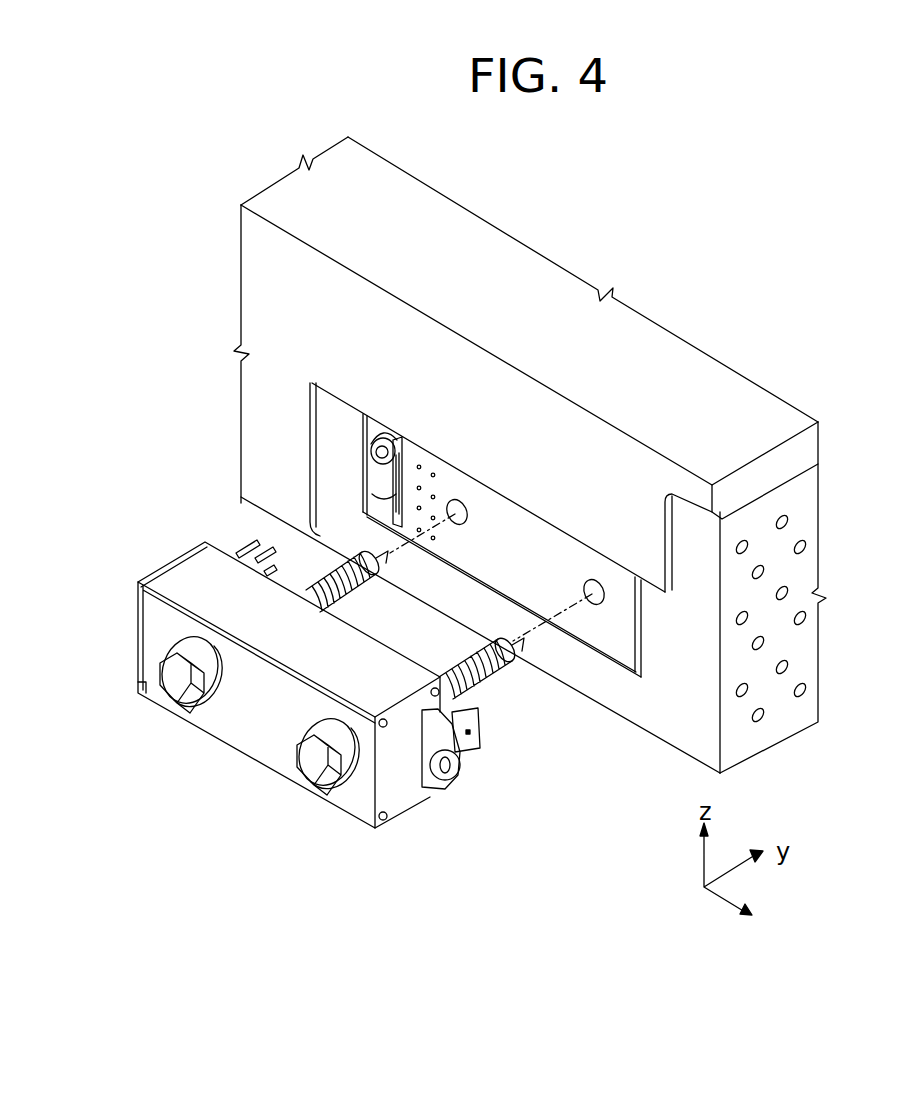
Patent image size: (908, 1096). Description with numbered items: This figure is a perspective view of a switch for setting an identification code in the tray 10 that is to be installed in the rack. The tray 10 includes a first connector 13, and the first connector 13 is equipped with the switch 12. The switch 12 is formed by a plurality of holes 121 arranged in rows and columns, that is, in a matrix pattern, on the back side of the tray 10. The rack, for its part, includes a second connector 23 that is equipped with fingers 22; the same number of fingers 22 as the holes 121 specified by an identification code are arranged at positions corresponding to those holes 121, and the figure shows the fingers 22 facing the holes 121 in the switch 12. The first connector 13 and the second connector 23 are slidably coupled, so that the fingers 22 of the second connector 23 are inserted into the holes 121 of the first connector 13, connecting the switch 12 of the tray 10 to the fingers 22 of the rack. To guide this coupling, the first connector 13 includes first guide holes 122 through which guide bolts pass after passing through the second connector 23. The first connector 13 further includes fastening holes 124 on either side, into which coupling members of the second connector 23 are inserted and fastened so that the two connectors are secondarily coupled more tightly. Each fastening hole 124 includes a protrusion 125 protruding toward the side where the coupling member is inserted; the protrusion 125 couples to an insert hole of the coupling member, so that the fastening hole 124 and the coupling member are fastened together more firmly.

The tray 10 is at (338, 173).
The switch 12 is at (452, 462).
The holes 121 is at (433, 477).
The first guide holes 122 is at (590, 590).
The first connector 13 is at (527, 547).
The fastening holes 124 is at (394, 493).
The protrusion 125 is at (392, 478).
The fingers 22 is at (242, 542).
The second connector 23 is at (252, 717).